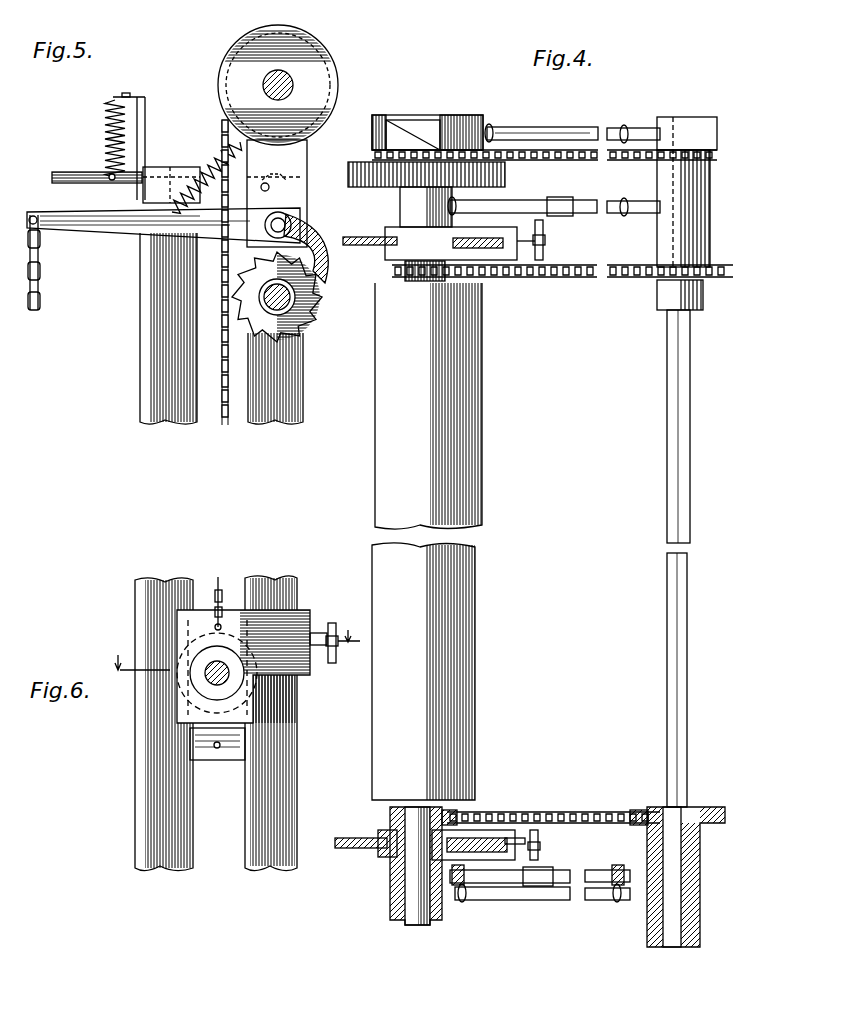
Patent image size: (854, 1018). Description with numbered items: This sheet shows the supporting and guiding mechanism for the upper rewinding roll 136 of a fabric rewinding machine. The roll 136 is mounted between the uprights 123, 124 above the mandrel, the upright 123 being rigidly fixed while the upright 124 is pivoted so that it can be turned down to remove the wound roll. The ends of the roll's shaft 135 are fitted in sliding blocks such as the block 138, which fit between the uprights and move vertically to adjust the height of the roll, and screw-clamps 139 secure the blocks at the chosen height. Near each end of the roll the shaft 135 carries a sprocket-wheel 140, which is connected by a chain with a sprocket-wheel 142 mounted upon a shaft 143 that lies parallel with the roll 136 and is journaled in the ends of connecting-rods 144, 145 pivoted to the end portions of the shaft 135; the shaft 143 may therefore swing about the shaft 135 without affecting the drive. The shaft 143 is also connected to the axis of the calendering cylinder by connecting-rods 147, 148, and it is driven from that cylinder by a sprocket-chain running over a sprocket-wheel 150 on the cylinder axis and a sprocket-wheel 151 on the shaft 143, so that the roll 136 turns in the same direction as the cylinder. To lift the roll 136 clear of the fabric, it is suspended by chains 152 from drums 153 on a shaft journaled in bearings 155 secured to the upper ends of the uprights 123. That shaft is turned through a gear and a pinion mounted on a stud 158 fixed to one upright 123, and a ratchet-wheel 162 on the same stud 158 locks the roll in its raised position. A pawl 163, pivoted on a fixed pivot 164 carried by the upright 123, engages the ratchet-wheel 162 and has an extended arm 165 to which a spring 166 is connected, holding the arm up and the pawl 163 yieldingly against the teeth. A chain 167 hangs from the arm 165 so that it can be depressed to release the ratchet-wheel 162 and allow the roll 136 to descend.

In FIG. 5, the upright 123 is at (285, 388).
In FIG. 4, the upright 123 is at (515, 780).
In FIG. 6, the upright 123 is at (285, 790).
In FIG. 5, the upright 124 is at (150, 396).
In FIG. 4, the upright 124 is at (342, 838).
In FIG. 6, the upright 124 is at (150, 803).
In FIG. 4, the shaft 135 is at (392, 873).
In FIG. 6, the shaft 135 is at (212, 680).
In FIG. 4, the rewinding roll 136 is at (393, 590).
In FIG. 6, the sliding block 138 is at (312, 623).
In FIG. 6, the screw-clamp 139 is at (336, 650).
In FIG. 4, the sprocket-wheel 140 is at (395, 270).
In FIG. 4, the sprocket-wheel 142 is at (708, 290).
In FIG. 4, the shaft 143 is at (667, 478).
In FIG. 4, the connecting-rod 144 is at (602, 875).
In FIG. 4, the connecting-rod 145 is at (622, 216).
In FIG. 4, the connecting-rod 147 is at (540, 900).
In FIG. 4, the connecting-rod 148 is at (575, 127).
In FIG. 4, the sprocket-wheel 150 is at (385, 125).
In FIG. 4, the sprocket-wheel 151 is at (717, 132).
In FIG. 5, the chain 152 is at (226, 420).
In FIG. 6, the chain 152 is at (222, 588).
In FIG. 5, the drum 153 is at (320, 70).
In FIG. 5, the bearing 155 is at (305, 157).
In FIG. 5, the stud 158 is at (300, 323).
In FIG. 5, the ratchet-wheel 162 is at (318, 304).
In FIG. 5, the pawl 163 is at (316, 250).
In FIG. 5, the fixed pivot 164 is at (285, 220).
In FIG. 5, the arm 165 is at (103, 232).
In FIG. 5, the spring 166 is at (218, 152).
In FIG. 5, the chain 167 is at (40, 300).